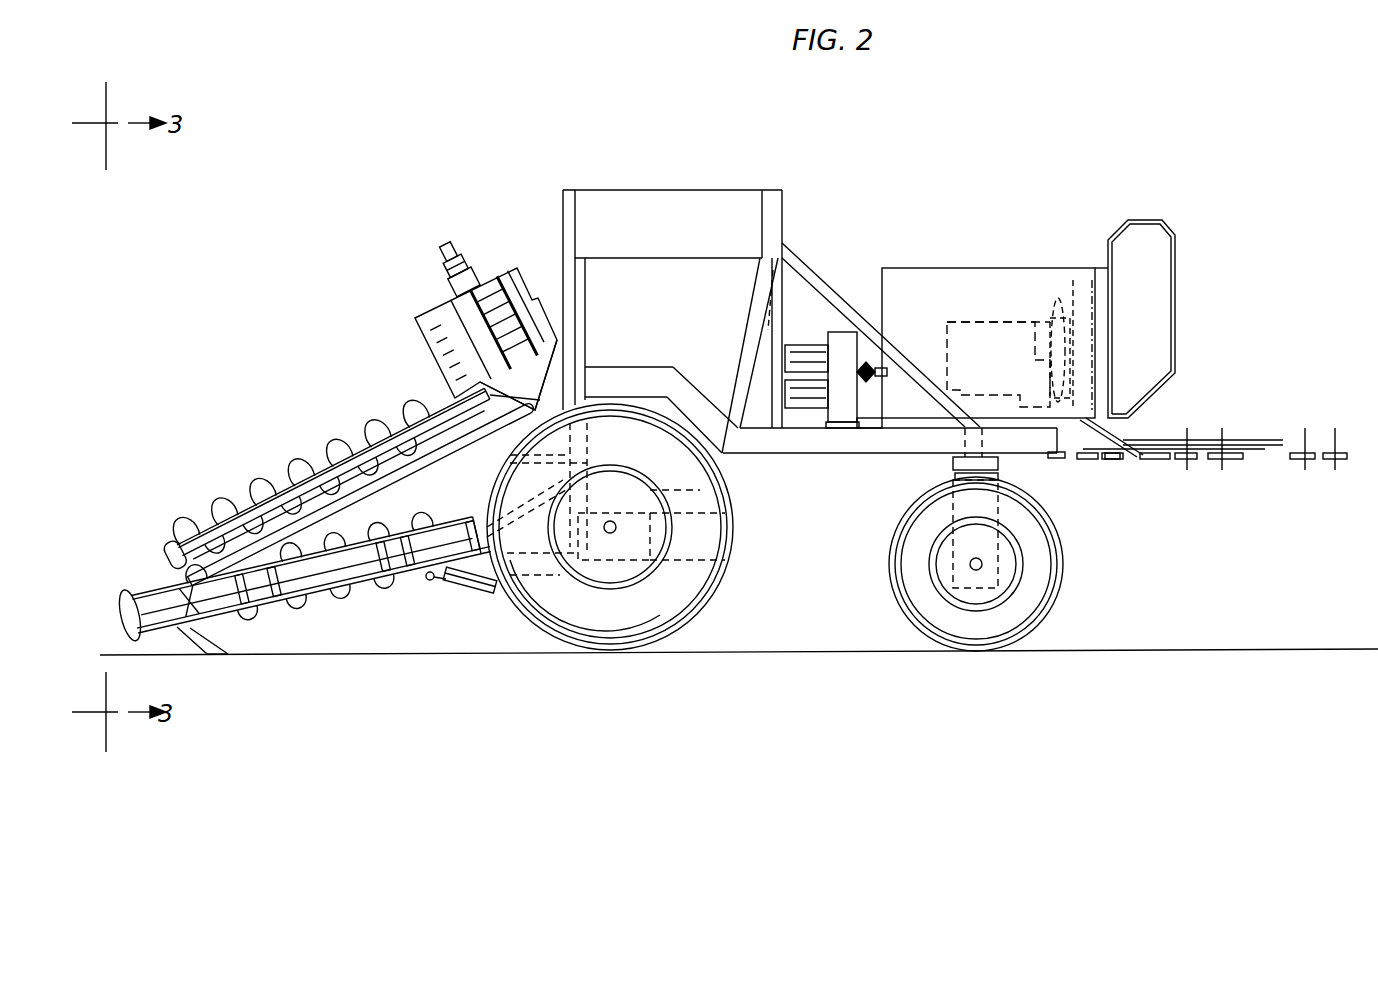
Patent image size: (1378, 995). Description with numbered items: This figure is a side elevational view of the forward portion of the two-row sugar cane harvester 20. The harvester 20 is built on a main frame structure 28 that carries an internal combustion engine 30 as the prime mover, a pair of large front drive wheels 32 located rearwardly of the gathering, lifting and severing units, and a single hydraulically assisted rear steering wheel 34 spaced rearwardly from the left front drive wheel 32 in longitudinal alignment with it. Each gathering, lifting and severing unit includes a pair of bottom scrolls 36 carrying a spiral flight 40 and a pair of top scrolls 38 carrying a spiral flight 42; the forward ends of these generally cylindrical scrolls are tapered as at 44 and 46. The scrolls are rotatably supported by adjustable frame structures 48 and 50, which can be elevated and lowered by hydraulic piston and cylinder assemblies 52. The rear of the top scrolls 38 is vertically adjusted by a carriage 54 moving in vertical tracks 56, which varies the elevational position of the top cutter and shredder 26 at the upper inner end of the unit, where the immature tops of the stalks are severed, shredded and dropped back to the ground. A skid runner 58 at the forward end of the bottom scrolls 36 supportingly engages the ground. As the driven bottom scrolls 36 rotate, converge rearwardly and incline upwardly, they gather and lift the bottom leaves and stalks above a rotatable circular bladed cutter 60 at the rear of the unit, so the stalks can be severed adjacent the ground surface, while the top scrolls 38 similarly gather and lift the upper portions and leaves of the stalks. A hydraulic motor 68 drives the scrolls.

The two-row sugar cane harvester 20 is at (872, 185).
The top cutter and shredder 26 is at (413, 290).
The main frame structure 28 is at (838, 464).
The internal combustion engine 30 is at (983, 318).
The front drive wheels 32 is at (650, 622).
The rear steering wheel 34 is at (1040, 565).
The bottom scrolls 36 is at (300, 592).
The top scrolls 38 is at (296, 472).
The spiral flight 40 is at (330, 580).
The spiral flight 42 is at (358, 440).
The tapered forward end of bottom scroll 44 is at (126, 612).
The tapered forward end of top scroll 46 is at (196, 522).
The adjustable frame structure 48 is at (372, 576).
The adjustable frame structure 50 is at (428, 476).
The hydraulic piston and cylinder assembly 52 is at (480, 598).
The carriage 54 is at (553, 352).
The vertical tracks 56 is at (565, 215).
The skid runner 58 is at (200, 656).
The rotatable cutter 60 is at (736, 565).
The hydraulic motor 68 is at (460, 247).